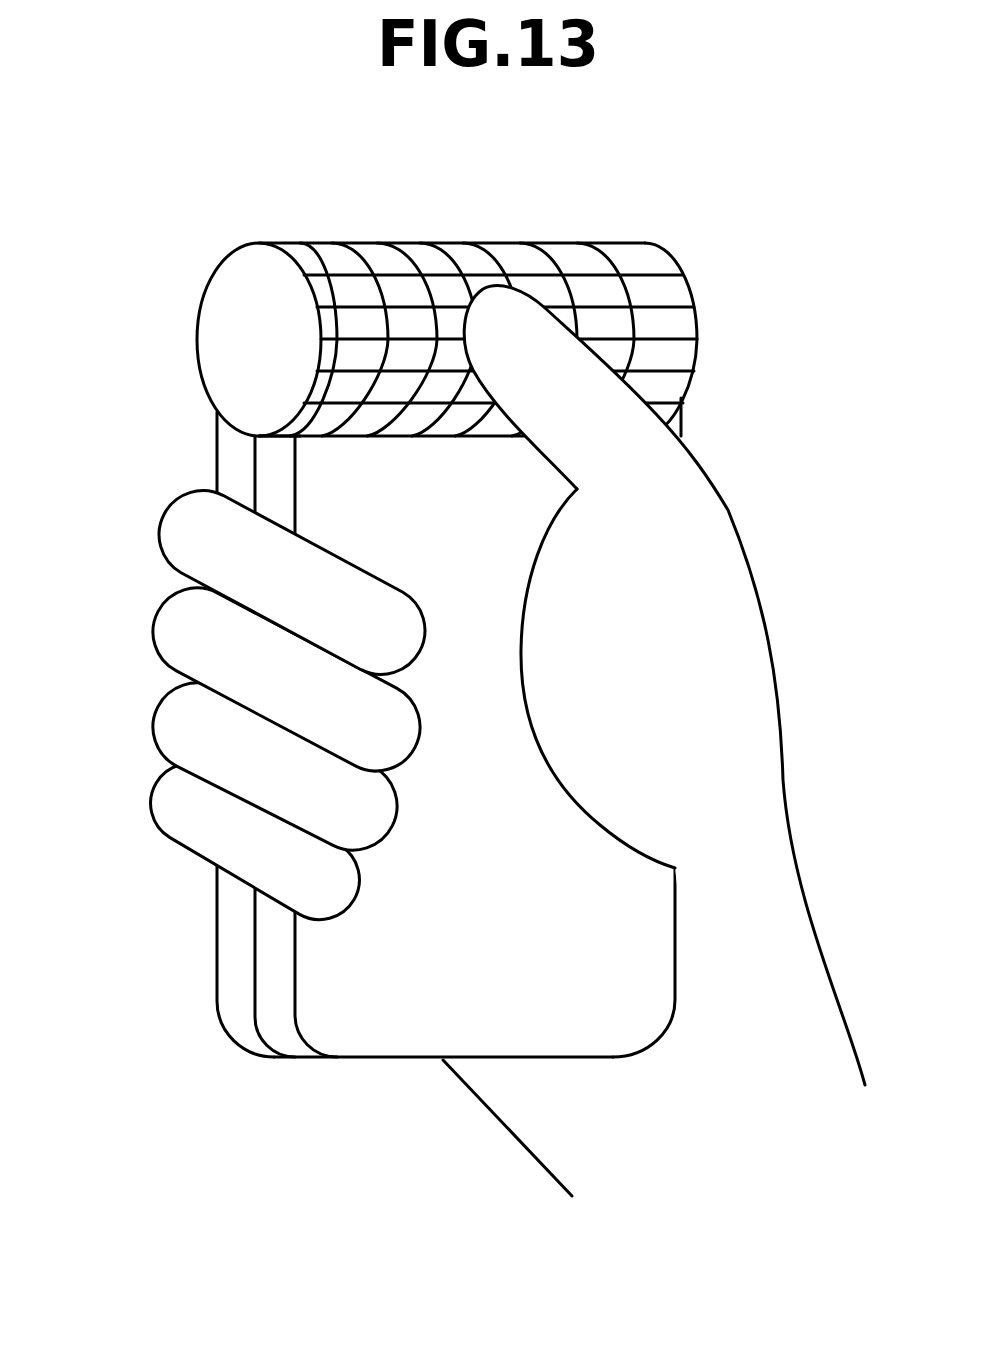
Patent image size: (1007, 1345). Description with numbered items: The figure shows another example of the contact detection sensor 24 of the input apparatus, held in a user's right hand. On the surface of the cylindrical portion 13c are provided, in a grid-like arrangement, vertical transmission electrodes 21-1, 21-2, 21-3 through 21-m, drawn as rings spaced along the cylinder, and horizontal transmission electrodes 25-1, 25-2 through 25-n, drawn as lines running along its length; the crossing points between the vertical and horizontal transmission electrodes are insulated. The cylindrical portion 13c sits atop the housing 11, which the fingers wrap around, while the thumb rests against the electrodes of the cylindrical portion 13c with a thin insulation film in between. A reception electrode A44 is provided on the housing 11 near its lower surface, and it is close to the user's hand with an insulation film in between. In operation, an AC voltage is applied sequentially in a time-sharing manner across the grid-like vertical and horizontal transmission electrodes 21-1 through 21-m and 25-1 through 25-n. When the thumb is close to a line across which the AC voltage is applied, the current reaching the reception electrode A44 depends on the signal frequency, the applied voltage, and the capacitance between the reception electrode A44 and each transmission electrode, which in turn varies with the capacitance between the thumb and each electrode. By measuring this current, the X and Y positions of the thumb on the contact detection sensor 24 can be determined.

The contact detection sensor 24 is at (141, 236).
The cylindrical portion 13c is at (223, 347).
The horizontal transmission electrode 25-1 is at (310, 248).
The horizontal transmission electrode 25-2 is at (334, 307).
The horizontal transmission electrode 25-n is at (297, 439).
The vertical transmission electrode 21-1 is at (367, 272).
The vertical transmission electrode 21-2 is at (410, 252).
The vertical transmission electrode 21-3 is at (479, 241).
The vertical transmission electrode 21-m is at (604, 253).
The housing 11 is at (300, 952).
The reception electrode A44 is at (403, 1025).